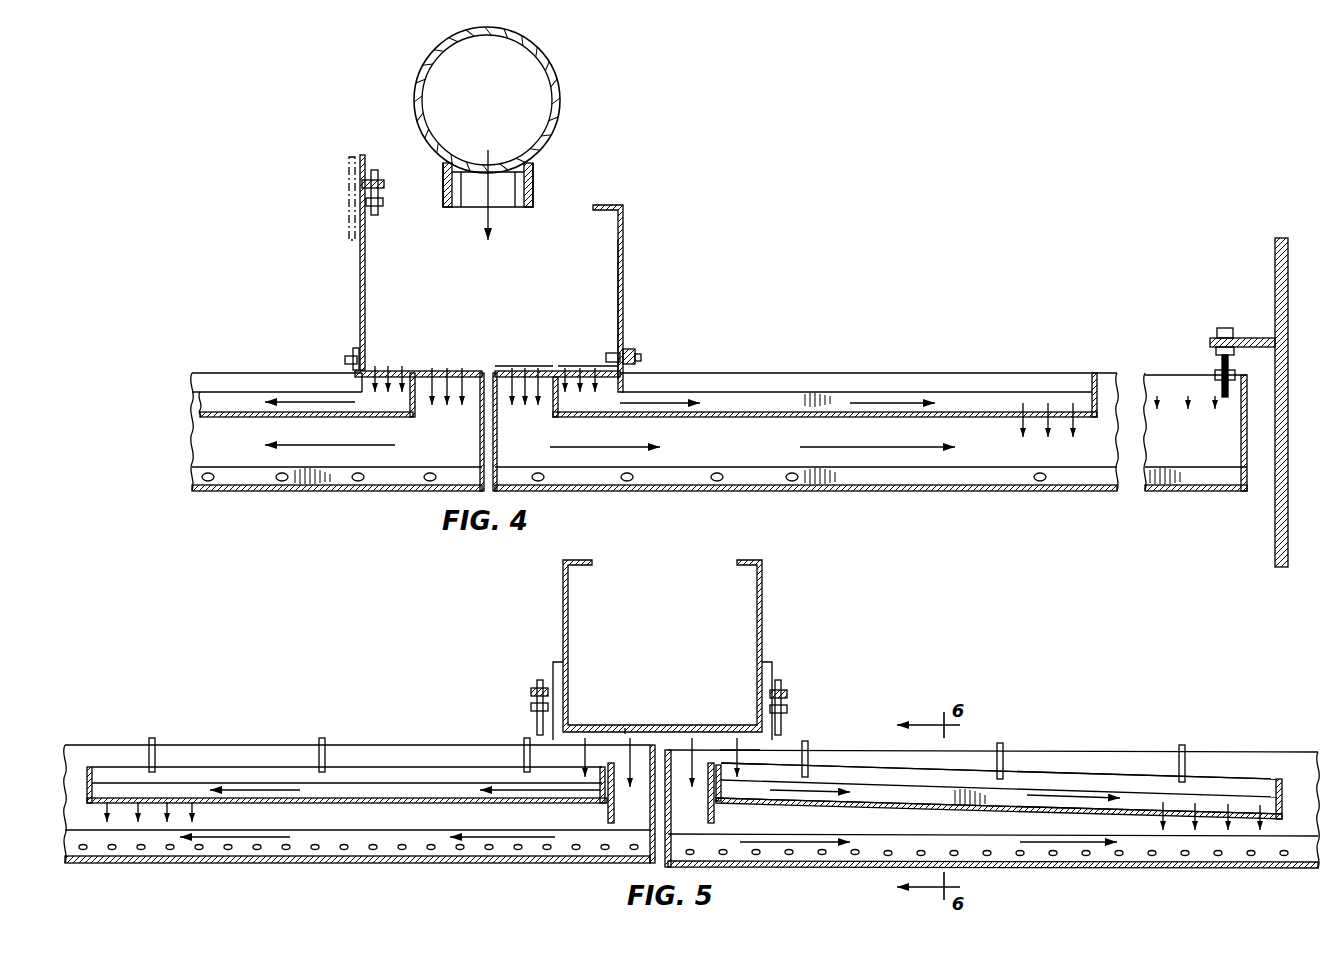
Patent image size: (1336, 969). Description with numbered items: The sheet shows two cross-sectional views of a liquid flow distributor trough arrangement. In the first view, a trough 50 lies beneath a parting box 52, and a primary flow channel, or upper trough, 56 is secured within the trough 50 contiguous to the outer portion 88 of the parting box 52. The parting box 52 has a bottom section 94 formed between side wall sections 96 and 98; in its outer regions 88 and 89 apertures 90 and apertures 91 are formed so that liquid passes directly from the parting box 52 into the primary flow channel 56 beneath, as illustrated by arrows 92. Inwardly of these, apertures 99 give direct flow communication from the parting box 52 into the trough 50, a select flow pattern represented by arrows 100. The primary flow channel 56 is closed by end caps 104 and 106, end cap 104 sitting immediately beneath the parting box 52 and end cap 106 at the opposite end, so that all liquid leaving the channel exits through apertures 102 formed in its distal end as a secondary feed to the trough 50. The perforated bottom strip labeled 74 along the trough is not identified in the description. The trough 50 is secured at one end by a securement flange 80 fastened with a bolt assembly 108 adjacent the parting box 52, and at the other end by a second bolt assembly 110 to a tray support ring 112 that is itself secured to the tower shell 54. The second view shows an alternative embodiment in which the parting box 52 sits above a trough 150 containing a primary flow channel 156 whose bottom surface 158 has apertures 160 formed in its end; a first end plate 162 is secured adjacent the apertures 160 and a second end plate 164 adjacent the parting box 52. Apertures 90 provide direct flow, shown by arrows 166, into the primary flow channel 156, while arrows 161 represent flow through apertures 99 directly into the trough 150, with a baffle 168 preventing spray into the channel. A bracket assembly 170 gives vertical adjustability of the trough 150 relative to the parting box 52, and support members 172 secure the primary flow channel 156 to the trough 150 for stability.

In FIG. 4, the trough 50 is at (398, 495).
In FIG. 4, the parting box 52 is at (623, 237).
In FIG. 5, the parting box 52 is at (762, 606).
In FIG. 4, the tower shell 54 is at (1285, 246).
In FIG. 4, the primary flow channel 56 is at (238, 395).
In FIG. 4, the perforated bottom plate 74 is at (213, 482).
In FIG. 5, the perforated bottom plate 74 is at (283, 848).
In FIG. 4, the securement flange 80 is at (623, 385).
In FIG. 4, the outer portion 88 is at (574, 350).
In FIG. 4, the outer parting box region 89 is at (378, 364).
In FIG. 4, the apertures 90 is at (553, 364).
In FIG. 5, the apertures 90 is at (732, 724).
In FIG. 4, the apertures 91 is at (404, 367).
In FIG. 5, the apertures 91 is at (590, 724).
In FIG. 4, the arrows 92 is at (672, 400).
In FIG. 4, the bottom section 94 is at (478, 368).
In FIG. 4, the side wall section 96 is at (358, 276).
In FIG. 4, the side wall section 98 is at (623, 282).
In FIG. 4, the inwardly disposed apertures 99 is at (514, 352).
In FIG. 5, the inwardly disposed apertures 99 is at (625, 728).
In FIG. 4, the arrows 100 is at (590, 449).
In FIG. 4, the apertures 102 is at (1018, 425).
In FIG. 4, the end cap 104 is at (546, 410).
In FIG. 4, the end cap 106 is at (1102, 380).
In FIG. 4, the bolt assembly 108 is at (641, 355).
In FIG. 4, the second bolt assembly 110 is at (1226, 326).
In FIG. 4, the tray support ring 112 is at (1254, 337).
In FIG. 5, the trough 150 is at (858, 860).
In FIG. 5, the primary flow channel 156 is at (962, 774).
In FIG. 5, the bottom surface 158 is at (1133, 788).
In FIG. 5, the apertures 160 is at (1213, 808).
In FIG. 5, the arrows 161 is at (622, 724).
In FIG. 5, the first end plate 162 is at (1283, 798).
In FIG. 5, the second end plate 164 is at (722, 798).
In FIG. 5, the arrows 166 is at (742, 752).
In FIG. 5, the baffle 168 is at (707, 798).
In FIG. 5, the bracket assembly 170 is at (788, 690).
In FIG. 5, the support members 172 is at (810, 757).